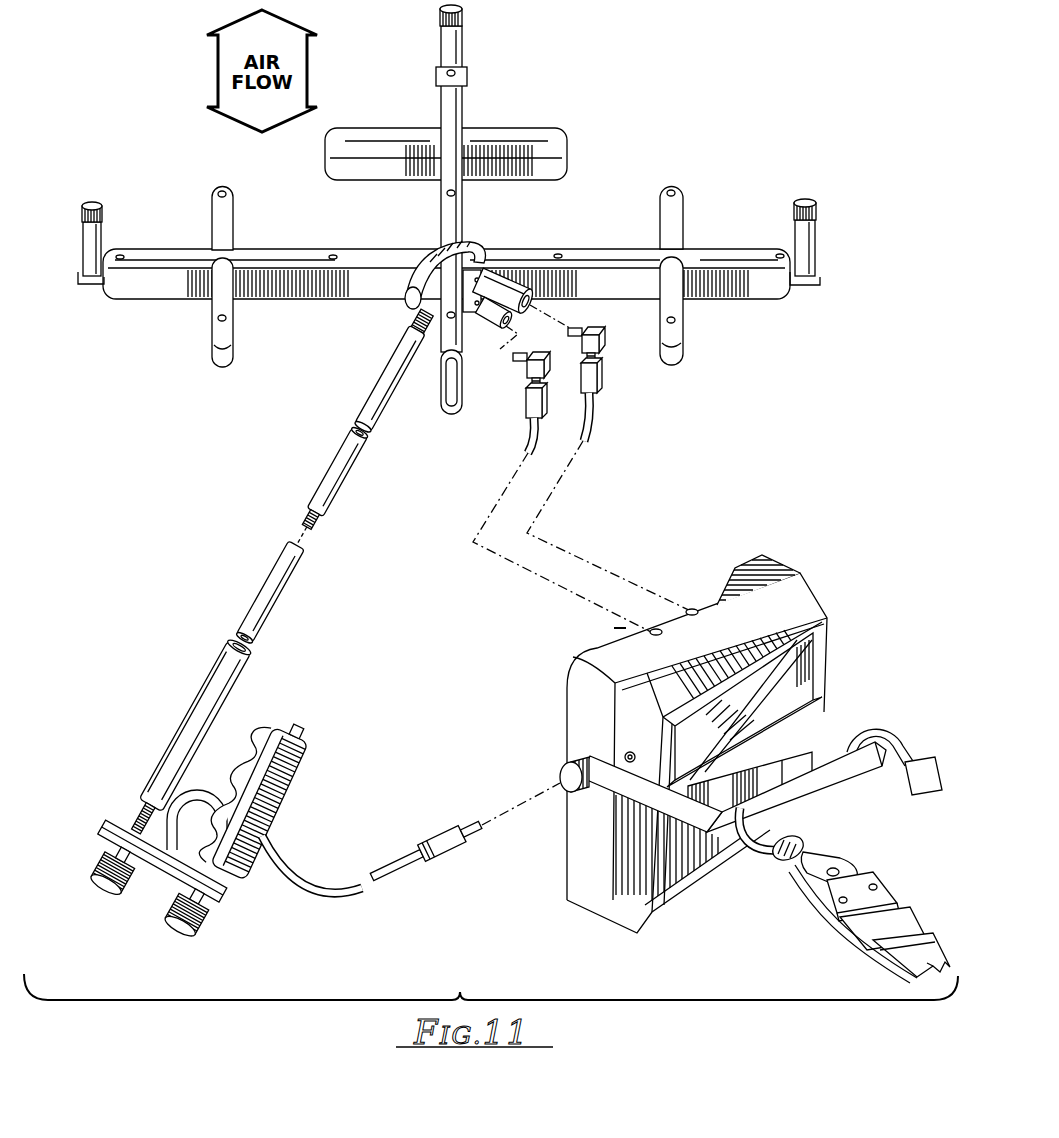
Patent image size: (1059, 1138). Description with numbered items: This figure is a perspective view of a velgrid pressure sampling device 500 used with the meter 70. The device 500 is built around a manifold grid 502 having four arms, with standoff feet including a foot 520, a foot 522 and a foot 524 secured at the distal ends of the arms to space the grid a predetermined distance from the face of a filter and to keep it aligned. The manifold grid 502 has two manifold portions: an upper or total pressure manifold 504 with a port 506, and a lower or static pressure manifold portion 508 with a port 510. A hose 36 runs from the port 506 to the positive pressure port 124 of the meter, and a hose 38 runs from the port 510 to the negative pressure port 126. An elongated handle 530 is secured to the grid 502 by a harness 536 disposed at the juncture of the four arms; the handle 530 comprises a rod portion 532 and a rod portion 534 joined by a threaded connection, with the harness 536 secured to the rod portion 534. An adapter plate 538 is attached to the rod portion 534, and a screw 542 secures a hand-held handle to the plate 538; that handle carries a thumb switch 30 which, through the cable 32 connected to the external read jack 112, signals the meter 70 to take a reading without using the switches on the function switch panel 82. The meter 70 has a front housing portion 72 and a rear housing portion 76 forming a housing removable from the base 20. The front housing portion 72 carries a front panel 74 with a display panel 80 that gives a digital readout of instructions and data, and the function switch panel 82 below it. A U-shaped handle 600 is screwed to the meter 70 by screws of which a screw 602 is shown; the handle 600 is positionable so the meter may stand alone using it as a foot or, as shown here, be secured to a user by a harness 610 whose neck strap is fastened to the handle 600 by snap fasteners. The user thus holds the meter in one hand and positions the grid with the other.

The base 20 is at (296, 772).
The thumb switch 30 is at (298, 727).
The cable 32 is at (307, 889).
The hose 36 is at (585, 441).
The hose 38 is at (520, 437).
The meter 70 is at (690, 727).
The front housing portion 72 is at (830, 616).
The front panel 74 is at (836, 701).
The rear housing portion 76 is at (752, 574).
The display panel 80 is at (793, 681).
The function switch panel 82 is at (792, 786).
The external read jack 112 is at (624, 756).
The positive pressure port 124 is at (692, 609).
The negative pressure port 126 is at (655, 630).
The velgrid pressure sampling device 500 is at (735, 105).
The manifold grid 502 is at (493, 112).
The upper total pressure manifold 504 is at (606, 264).
The port 506 is at (498, 290).
The lower static pressure manifold portion 508 is at (290, 298).
The port 510 is at (480, 329).
The foot 520 is at (815, 244).
The foot 522 is at (461, 36).
The foot 524 is at (82, 212).
The handle 530 is at (251, 580).
The rod portion 532 is at (306, 504).
The rod portion 534 is at (193, 714).
The harness 536 is at (476, 246).
The adapter plate 538 is at (160, 882).
The screw 542 is at (190, 924).
The U-shaped handle 600 is at (761, 790).
The screw 602 is at (562, 779).
The harness 610 is at (855, 976).